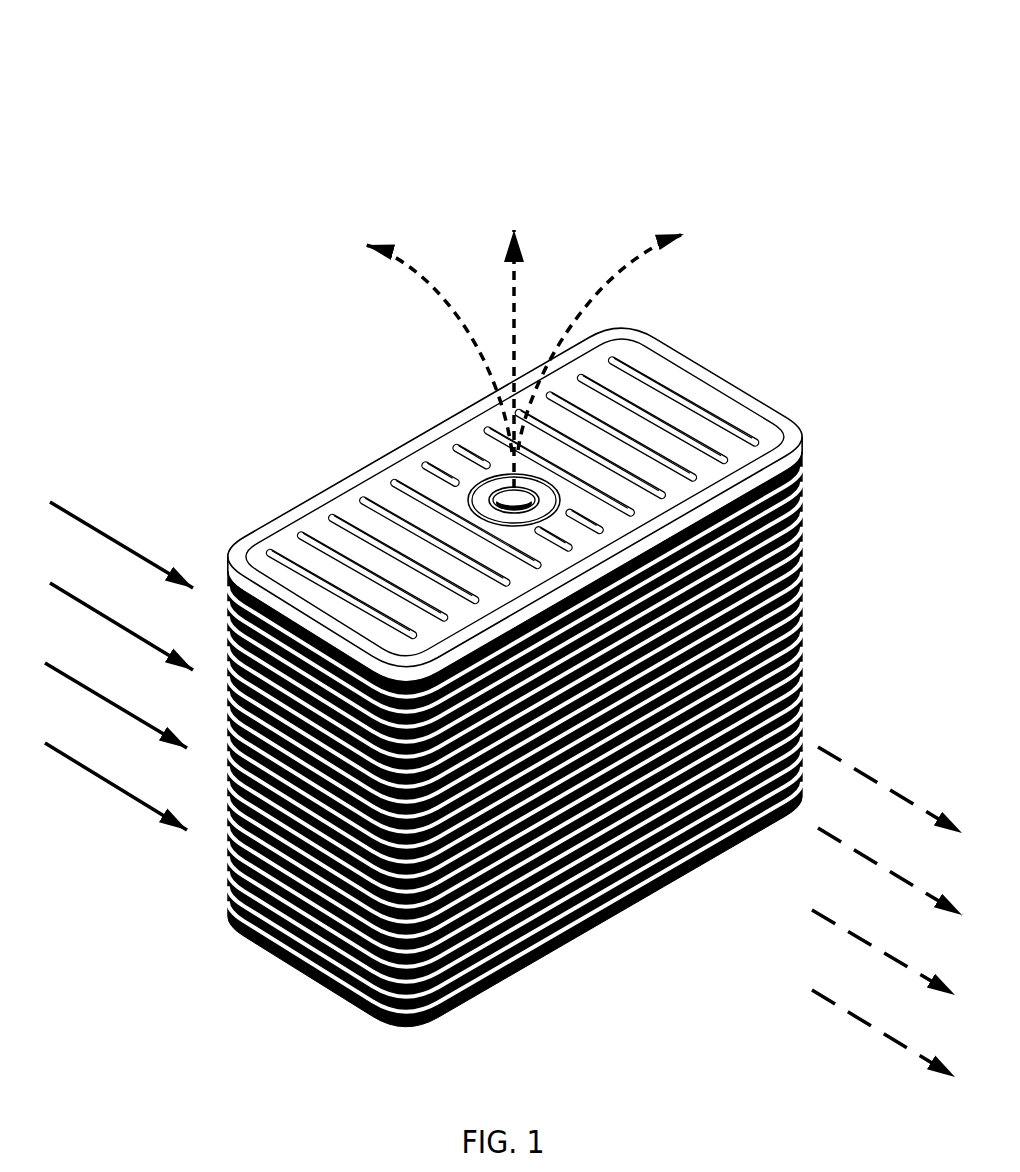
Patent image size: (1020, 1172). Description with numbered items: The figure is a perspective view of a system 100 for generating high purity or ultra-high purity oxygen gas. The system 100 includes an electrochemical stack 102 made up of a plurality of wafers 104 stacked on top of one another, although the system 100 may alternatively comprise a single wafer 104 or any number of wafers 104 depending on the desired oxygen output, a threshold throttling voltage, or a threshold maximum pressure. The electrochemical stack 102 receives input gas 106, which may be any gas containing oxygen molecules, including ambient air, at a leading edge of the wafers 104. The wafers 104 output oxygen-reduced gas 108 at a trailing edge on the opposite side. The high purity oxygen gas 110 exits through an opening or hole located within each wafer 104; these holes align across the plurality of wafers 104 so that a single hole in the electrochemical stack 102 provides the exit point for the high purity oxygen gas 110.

The system 100 is at (245, 60).
The electrochemical stack 102 is at (332, 503).
The wafers 104 is at (783, 447).
The input gas 106 is at (88, 882).
The oxygen-reduced gas 108 is at (800, 1139).
The high purity oxygen gas 110 is at (523, 187).